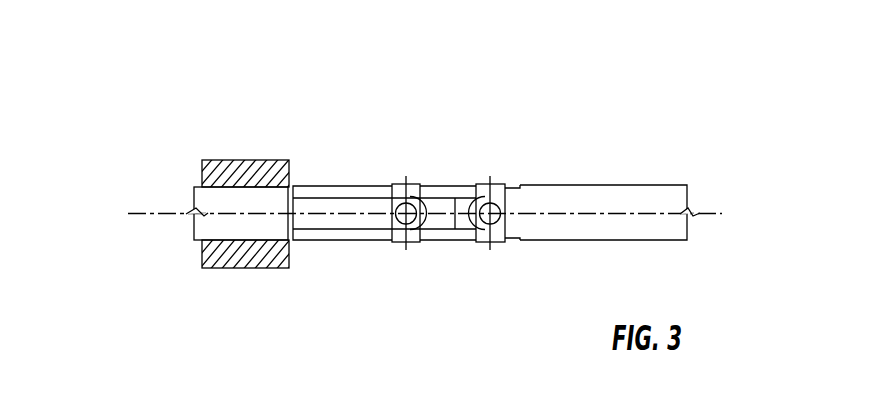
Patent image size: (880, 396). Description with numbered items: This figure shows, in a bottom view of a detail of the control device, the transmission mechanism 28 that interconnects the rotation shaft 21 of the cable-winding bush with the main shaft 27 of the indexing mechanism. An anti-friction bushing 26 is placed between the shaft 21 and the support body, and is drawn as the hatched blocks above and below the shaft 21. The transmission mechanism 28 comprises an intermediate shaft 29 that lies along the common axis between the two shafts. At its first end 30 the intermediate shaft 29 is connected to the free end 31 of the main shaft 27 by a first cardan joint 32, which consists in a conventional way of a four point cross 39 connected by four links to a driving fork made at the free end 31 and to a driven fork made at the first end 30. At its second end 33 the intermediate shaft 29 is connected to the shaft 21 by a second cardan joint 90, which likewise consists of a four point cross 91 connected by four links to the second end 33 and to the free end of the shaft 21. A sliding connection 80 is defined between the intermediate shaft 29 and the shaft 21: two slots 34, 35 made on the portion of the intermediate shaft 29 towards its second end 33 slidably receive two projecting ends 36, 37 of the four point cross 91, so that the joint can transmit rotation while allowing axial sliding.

The transmission mechanism 28 is at (122, 123).
The rotation shaft 21 is at (213, 203).
The anti-friction bushing 26 is at (210, 250).
The slot 34 is at (330, 187).
The slot 35 is at (315, 240).
The sliding connection 80 is at (322, 308).
The projecting end 37 is at (392, 248).
The projecting end 36 is at (413, 182).
The four point cross 91 is at (428, 180).
The second end 33 is at (405, 257).
The intermediate shaft 29 is at (444, 226).
The four point cross 39 is at (498, 180).
The second cardan joint 90 is at (437, 102).
The first end 30 is at (490, 257).
The free end 31 is at (531, 180).
The main shaft 27 is at (638, 198).
The first cardan joint 32 is at (542, 122).